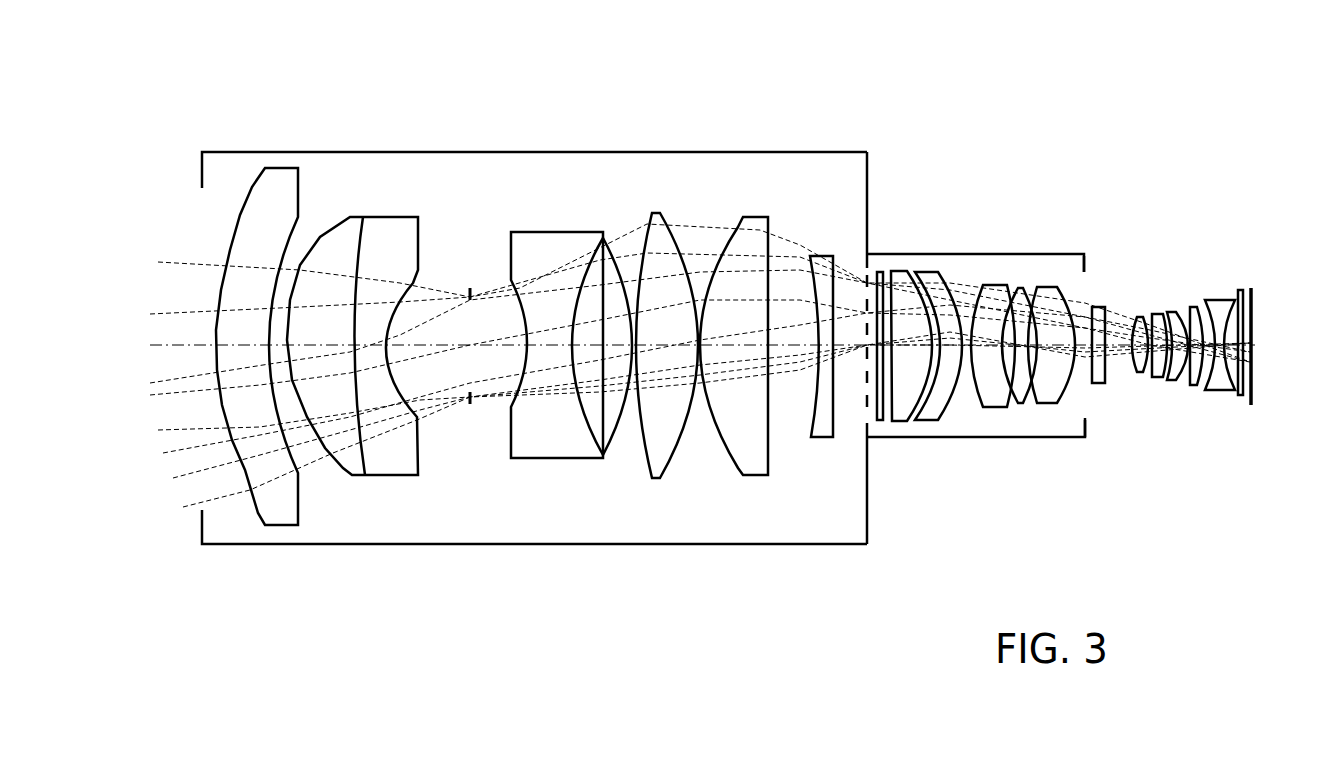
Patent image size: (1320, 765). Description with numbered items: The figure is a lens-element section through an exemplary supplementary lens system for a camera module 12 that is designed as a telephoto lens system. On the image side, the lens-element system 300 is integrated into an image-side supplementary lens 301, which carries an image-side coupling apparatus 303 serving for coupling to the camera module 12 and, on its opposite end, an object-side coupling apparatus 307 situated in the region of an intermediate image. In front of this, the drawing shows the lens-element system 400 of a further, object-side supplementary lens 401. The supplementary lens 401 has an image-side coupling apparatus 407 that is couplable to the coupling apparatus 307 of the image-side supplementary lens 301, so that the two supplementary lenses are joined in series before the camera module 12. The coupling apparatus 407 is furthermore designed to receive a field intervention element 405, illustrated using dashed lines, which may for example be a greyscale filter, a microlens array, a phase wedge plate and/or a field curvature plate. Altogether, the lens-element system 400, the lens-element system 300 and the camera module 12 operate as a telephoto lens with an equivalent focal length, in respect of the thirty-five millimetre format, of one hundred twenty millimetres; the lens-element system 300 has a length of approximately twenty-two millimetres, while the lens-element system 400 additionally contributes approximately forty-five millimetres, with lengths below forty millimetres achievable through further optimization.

The camera module 12 is at (1255, 462).
The lens-element system 300 is at (1087, 462).
The image-side supplementary lens 301 is at (1010, 254).
The image-side coupling apparatus 303 is at (1087, 258).
The object-side coupling apparatus 307 is at (871, 254).
The lens-element system 400 is at (868, 560).
The object-side supplementary lens 401 is at (325, 152).
The field intervention element 405 is at (866, 407).
The image-side coupling apparatus 407 is at (866, 250).